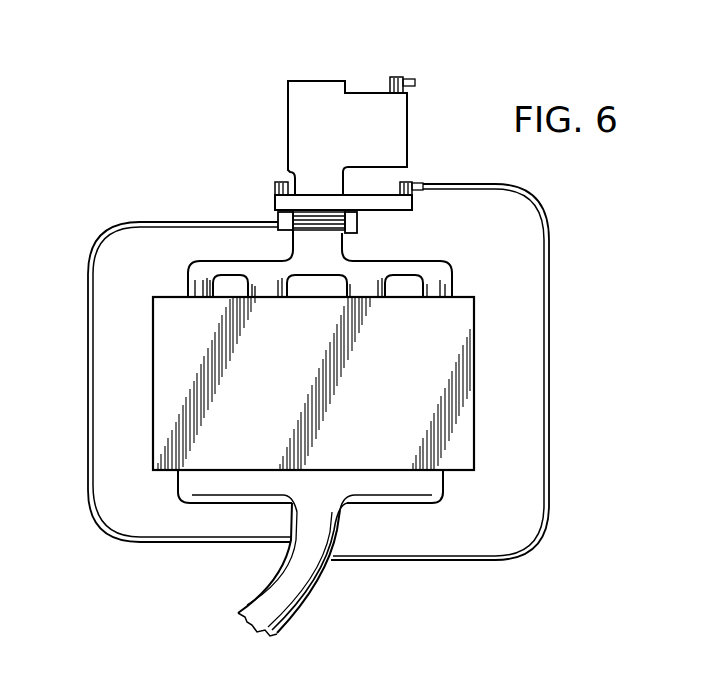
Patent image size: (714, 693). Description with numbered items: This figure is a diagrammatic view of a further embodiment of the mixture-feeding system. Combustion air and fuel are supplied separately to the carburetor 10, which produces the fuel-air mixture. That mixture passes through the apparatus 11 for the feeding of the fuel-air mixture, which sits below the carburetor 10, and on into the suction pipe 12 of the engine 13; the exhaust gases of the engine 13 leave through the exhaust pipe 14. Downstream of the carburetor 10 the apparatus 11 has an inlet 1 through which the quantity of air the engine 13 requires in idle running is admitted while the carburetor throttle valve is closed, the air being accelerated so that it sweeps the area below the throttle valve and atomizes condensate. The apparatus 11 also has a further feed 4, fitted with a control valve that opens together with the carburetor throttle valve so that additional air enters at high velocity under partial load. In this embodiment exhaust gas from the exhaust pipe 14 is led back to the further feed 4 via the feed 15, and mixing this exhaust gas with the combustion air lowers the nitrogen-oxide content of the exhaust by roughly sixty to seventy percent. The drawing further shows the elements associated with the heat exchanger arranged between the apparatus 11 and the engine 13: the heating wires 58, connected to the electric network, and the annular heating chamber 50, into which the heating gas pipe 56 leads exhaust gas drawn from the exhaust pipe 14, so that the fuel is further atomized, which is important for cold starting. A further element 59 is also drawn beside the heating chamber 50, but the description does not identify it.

The carburetor 10 is at (302, 103).
The apparatus for the feeding of the fuel-air mixture 11 is at (412, 205).
The inlet 1 is at (275, 190).
The further feed 4 is at (420, 181).
The heating wires 58 is at (277, 219).
The annular heating chamber 50 is at (357, 220).
The connector block 59 is at (345, 233).
The suction pipe 12 is at (450, 276).
The engine 13 is at (436, 378).
The exhaust pipe 14 is at (443, 482).
The heating gas pipe 56 is at (88, 490).
The feed 15 is at (508, 560).